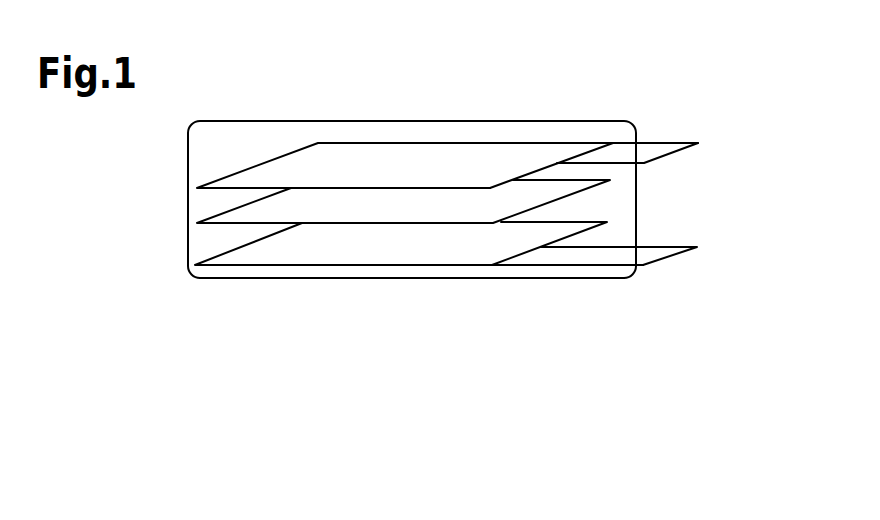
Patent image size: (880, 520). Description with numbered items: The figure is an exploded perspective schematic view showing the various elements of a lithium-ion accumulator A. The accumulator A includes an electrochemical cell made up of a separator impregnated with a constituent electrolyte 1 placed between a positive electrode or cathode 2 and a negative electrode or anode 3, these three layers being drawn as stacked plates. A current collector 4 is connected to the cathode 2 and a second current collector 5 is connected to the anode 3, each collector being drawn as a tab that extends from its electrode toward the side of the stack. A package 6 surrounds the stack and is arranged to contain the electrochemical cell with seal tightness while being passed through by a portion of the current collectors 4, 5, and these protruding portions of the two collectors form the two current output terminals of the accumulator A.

The lithium-ion accumulator A is at (548, 96).
The electrolyte 1 is at (585, 190).
The positive electrode or cathode 2 is at (418, 163).
The negative electrode or anode 3 is at (337, 242).
The current collector 4 is at (648, 143).
The current collector 5 is at (657, 257).
The package 6 is at (427, 278).